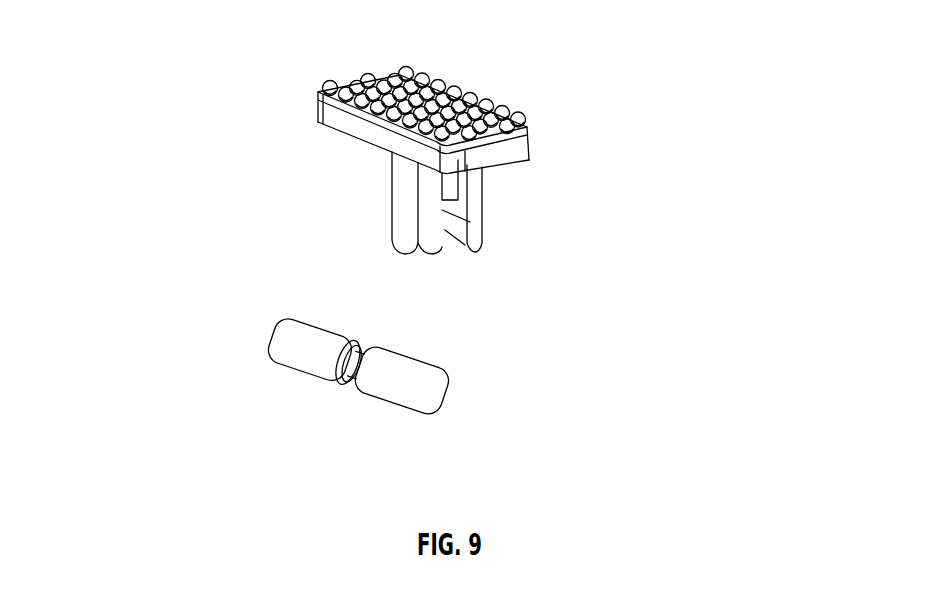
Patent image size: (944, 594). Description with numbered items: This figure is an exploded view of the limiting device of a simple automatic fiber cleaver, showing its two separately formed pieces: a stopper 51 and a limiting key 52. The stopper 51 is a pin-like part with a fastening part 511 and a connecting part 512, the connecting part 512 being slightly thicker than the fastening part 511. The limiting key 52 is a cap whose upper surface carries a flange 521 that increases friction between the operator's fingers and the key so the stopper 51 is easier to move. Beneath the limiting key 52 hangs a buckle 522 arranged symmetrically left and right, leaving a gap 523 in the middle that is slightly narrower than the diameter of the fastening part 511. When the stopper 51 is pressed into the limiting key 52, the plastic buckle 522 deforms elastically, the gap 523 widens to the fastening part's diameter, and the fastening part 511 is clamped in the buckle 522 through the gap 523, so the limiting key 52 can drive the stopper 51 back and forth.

The stopper 51 is at (320, 341).
The fastening part 511 is at (360, 382).
The connecting part 512 is at (413, 385).
The limiting key 52 is at (492, 143).
The flange 521 is at (443, 88).
The buckle 522 is at (458, 222).
The gap 523 is at (445, 253).